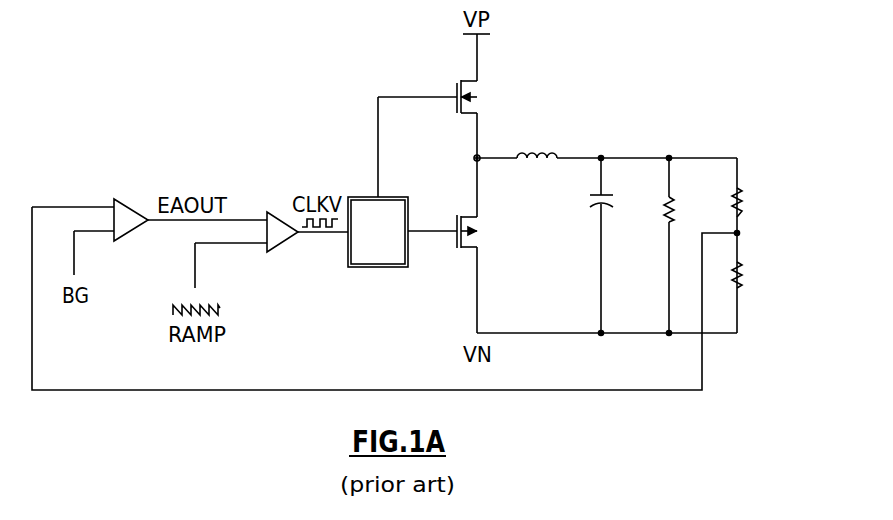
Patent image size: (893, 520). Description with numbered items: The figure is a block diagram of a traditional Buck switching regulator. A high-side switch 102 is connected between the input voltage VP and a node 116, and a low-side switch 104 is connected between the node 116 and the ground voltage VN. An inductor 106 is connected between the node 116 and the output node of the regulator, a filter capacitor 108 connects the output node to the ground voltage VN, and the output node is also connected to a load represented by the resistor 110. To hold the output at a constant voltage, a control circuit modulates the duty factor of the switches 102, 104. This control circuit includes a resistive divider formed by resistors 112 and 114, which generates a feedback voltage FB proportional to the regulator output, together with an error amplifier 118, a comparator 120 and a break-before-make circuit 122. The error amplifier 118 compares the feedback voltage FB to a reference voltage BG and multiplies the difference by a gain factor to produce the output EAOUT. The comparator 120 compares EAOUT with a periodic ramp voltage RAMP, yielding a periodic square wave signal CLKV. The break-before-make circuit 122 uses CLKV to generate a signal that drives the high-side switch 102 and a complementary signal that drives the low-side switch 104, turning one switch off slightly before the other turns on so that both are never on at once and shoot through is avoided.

The switch 102 is at (480, 92).
The switch 104 is at (479, 242).
The inductor 106 is at (543, 151).
The filter capacitor 108 is at (590, 201).
The resistor 110 is at (667, 213).
The resistor 112 is at (742, 203).
The resistor 114 is at (742, 275).
The node 116 is at (474, 157).
The error amplifier 118 is at (126, 199).
The comparator 120 is at (285, 248).
The break-before-make circuit 122 is at (358, 256).